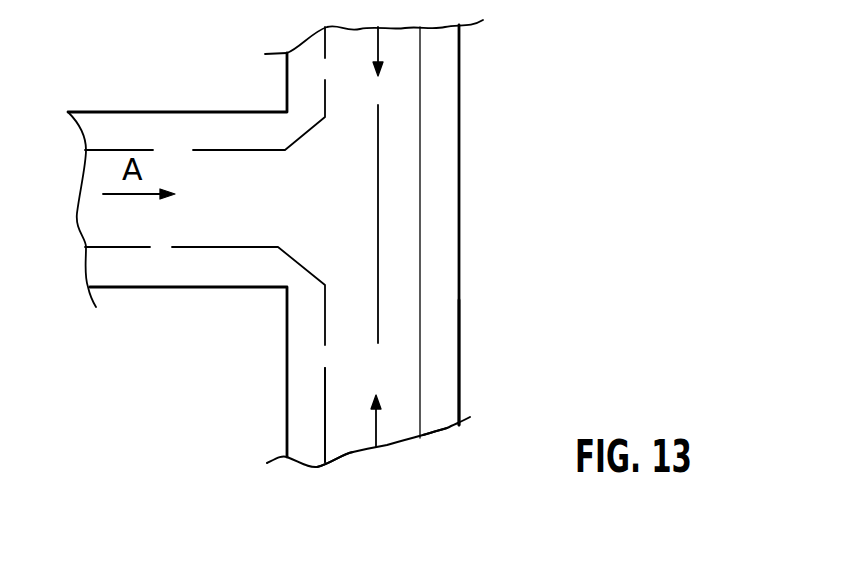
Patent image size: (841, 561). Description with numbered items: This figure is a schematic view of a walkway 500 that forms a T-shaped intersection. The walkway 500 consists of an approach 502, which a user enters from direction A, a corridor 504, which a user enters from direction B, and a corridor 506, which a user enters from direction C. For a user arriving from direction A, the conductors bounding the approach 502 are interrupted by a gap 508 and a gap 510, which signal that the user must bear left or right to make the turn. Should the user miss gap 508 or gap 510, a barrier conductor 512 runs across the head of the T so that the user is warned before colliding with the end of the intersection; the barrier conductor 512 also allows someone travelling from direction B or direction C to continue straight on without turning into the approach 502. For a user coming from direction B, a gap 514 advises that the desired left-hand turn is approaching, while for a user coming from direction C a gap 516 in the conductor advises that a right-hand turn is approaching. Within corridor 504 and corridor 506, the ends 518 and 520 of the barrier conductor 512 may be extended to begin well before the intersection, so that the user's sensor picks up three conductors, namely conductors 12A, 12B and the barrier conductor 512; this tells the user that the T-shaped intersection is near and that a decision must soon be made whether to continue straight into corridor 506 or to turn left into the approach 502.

The walkway 500 is at (453, 230).
The approach 502 is at (124, 272).
The corridor 504 is at (447, 400).
The corridor 506 is at (447, 95).
The gap 508 is at (168, 137).
The gap 510 is at (165, 248).
The barrier conductor 512 is at (388, 182).
The gap 514 is at (327, 362).
The gap 516 is at (325, 70).
The end of barrier conductor 518 is at (388, 340).
The end of barrier conductor 520 is at (381, 121).
The conductor 12A is at (332, 443).
The conductor 12B is at (435, 420).